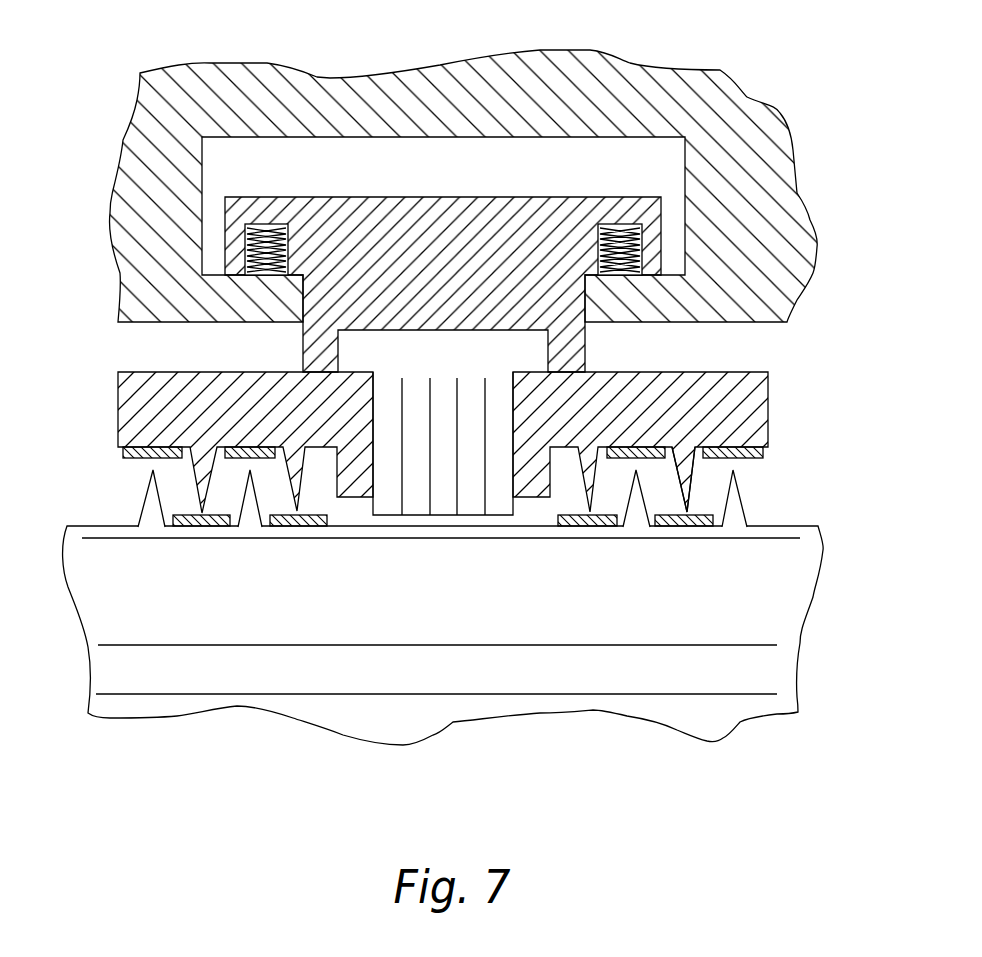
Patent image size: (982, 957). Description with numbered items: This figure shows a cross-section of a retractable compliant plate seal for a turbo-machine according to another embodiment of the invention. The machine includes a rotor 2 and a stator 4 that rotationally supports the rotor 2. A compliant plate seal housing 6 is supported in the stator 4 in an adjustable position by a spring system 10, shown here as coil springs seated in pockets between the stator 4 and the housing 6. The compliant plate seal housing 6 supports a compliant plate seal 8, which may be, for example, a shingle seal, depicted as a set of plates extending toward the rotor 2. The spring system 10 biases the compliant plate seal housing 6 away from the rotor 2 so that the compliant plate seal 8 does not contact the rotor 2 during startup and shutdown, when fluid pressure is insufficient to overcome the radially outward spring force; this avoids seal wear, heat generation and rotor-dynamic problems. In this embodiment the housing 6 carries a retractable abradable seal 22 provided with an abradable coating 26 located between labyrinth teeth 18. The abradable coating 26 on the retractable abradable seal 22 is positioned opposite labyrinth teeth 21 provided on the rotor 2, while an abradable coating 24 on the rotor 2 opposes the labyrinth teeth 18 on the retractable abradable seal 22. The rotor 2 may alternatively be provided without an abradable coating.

The rotor 2 is at (750, 610).
The stator 4 is at (353, 110).
The compliant plate seal housing 6 is at (518, 225).
The compliant plate seal 8 is at (439, 483).
The spring system 10 is at (245, 260).
The labyrinth teeth 18 is at (688, 472).
The labyrinth teeth 21 is at (147, 503).
The retractable abradable seal 22 is at (728, 402).
The abradable coating 24 is at (190, 520).
The abradable coating 26 is at (127, 460).